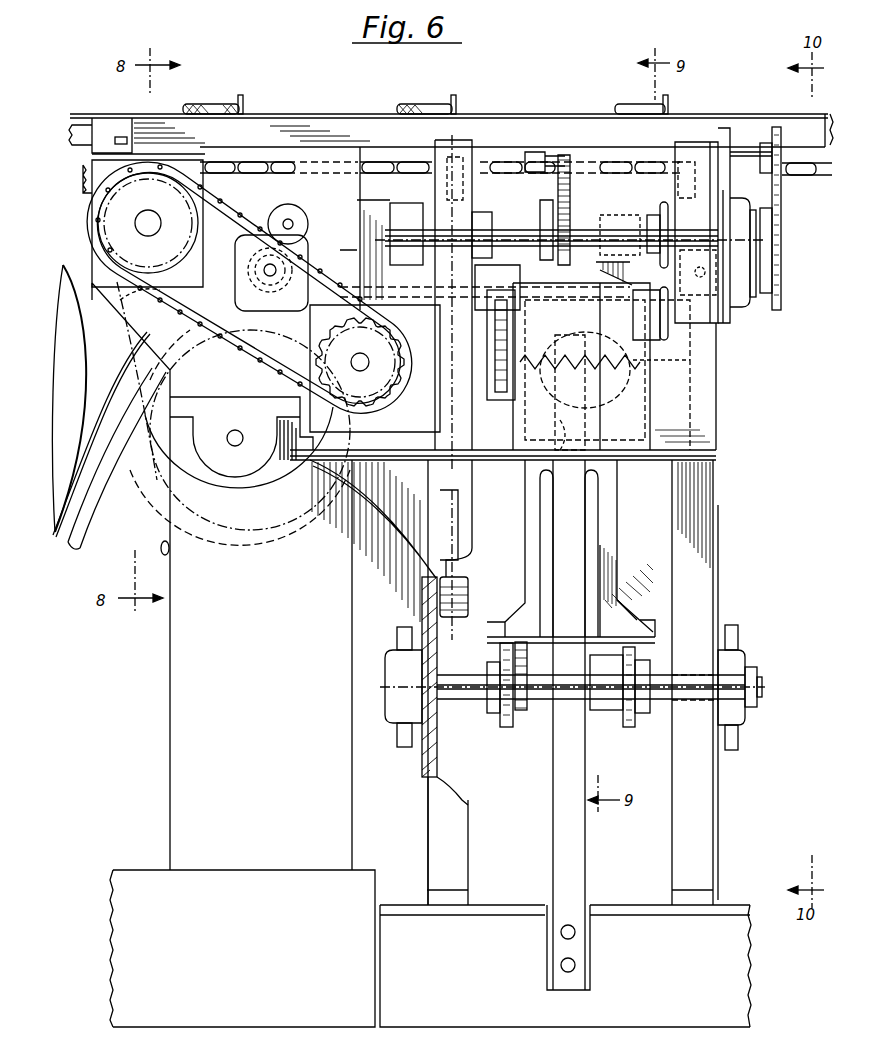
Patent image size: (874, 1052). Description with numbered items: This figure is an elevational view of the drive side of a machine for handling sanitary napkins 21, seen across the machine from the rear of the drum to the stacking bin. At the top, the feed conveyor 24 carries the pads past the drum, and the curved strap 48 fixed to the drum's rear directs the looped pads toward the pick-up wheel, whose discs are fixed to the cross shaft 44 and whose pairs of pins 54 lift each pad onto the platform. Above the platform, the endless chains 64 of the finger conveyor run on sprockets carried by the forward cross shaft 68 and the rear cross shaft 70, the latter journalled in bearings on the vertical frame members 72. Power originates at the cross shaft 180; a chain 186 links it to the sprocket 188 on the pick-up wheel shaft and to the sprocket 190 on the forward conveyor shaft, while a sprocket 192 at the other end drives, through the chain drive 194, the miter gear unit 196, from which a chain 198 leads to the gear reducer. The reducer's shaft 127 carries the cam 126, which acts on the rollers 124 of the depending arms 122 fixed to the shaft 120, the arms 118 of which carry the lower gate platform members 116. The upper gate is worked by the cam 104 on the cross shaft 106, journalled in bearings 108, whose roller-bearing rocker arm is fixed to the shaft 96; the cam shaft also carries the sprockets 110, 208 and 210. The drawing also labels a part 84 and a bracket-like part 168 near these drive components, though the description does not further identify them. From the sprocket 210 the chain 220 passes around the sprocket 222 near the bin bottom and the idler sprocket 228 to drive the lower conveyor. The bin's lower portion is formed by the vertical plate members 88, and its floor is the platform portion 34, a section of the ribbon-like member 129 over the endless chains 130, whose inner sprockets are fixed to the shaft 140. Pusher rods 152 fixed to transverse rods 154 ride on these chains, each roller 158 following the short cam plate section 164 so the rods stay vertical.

The sanitary napkins 21 is at (217, 104).
The conveyor 24 is at (539, 113).
The shaft 96 is at (630, 178).
The sprocket 210 is at (458, 213).
The cam 104 is at (540, 217).
The cross shaft 106 is at (600, 232).
The sprocket 110 is at (650, 215).
The bearings 108 is at (740, 210).
The sprocket 208 is at (784, 238).
The cross shaft 180 is at (156, 215).
The endless chains 64 is at (375, 250).
The cross shaft 68 is at (262, 270).
The sprocket 192 is at (229, 275).
The chain 186 is at (131, 381).
The sprocket 190 is at (287, 308).
The shaft 84 is at (435, 296).
The bracket 168 is at (596, 278).
The depending arms 122 is at (530, 333).
The shaft 120 is at (618, 335).
The roller 124 is at (676, 361).
The vertical frame members 72 is at (717, 349).
The arms 118 is at (662, 406).
The shaft 127 is at (580, 385).
The chain drive 194 is at (245, 348).
The curved strap 48 is at (108, 380).
The cross shaft 44 is at (240, 432).
The chain 198 is at (492, 398).
The miter gear unit 196 is at (360, 433).
The platform members 116 is at (500, 422).
The cam 126 is at (548, 428).
The pins 54 is at (163, 542).
The sprocket 188 is at (238, 546).
The chain 220 is at (462, 526).
The vertical plate members 88 is at (622, 530).
The pusher rods 152 is at (600, 560).
The idler sprocket 228 is at (466, 582).
The roller 158 is at (518, 636).
The sprocket 222 is at (455, 665).
The platform portion 34 is at (572, 678).
The transverse rod 154 is at (605, 682).
The short cam plate section 164 is at (519, 712).
The endless chains 130 is at (498, 730).
The ribbon-like member 129 is at (590, 752).
The shaft 140 is at (762, 688).
The cross shaft 70 is at (722, 301).